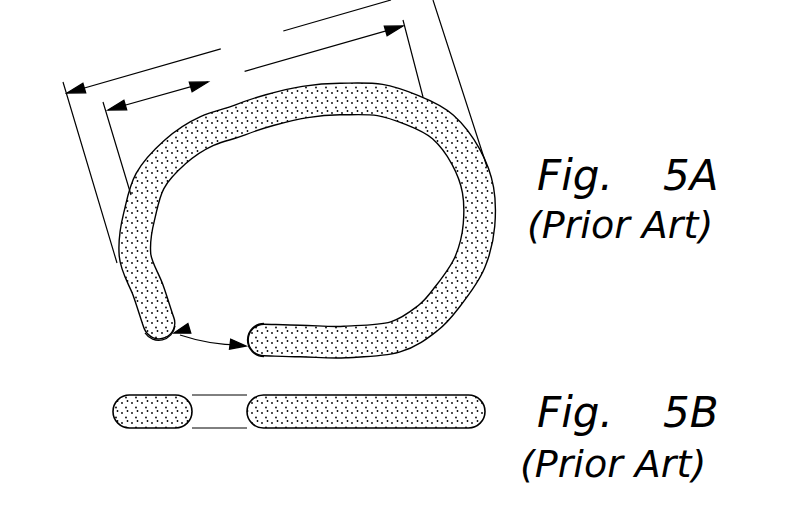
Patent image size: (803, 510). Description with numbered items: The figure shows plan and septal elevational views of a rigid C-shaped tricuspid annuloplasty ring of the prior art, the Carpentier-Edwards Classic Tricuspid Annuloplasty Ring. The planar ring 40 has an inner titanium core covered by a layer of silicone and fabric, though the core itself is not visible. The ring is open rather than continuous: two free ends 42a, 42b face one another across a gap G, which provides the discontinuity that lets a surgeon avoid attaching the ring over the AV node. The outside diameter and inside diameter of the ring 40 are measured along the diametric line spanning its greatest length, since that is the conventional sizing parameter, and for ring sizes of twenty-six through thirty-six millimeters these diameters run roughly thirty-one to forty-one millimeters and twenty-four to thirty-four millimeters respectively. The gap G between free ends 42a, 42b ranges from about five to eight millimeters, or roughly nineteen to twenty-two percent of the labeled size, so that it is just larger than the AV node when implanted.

In FIG. 5A, the planar ring 40 is at (510, 66).
In FIG. 5B, the planar ring 40 is at (105, 400).
In FIG. 5A, the free end 42a is at (158, 340).
In FIG. 5A, the free end 42b is at (248, 333).
In FIG. 5A, the gap G is at (205, 343).